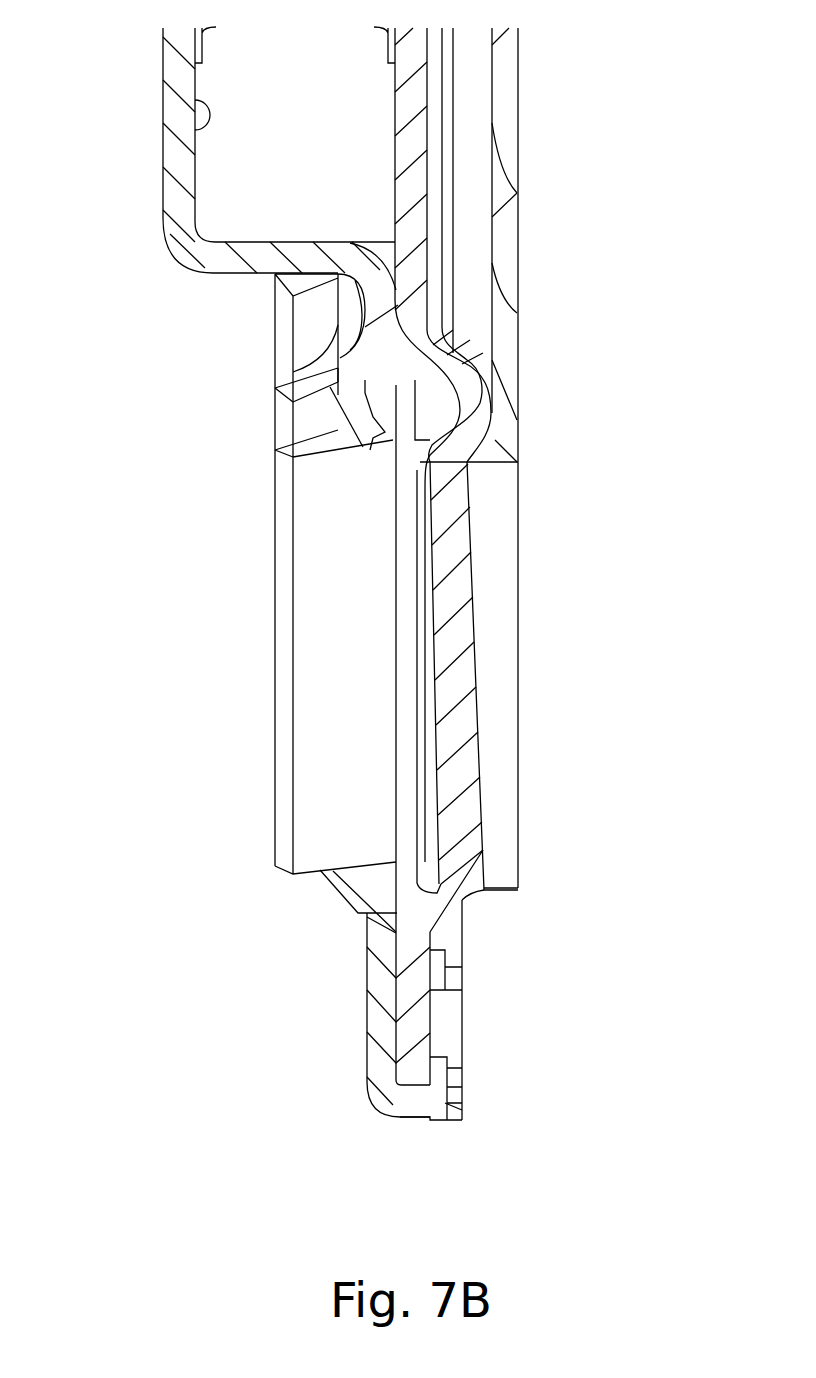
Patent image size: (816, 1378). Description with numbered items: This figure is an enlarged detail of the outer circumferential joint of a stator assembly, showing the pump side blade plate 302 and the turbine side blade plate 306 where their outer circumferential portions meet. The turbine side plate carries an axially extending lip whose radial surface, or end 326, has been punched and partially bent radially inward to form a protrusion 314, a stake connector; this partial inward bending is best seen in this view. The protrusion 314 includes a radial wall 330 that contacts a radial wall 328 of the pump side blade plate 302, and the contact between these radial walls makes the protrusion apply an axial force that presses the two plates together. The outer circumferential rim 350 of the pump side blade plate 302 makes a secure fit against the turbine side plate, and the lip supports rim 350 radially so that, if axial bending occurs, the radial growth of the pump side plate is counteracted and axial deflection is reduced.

The turbine side blade plate 306 is at (158, 180).
The pump side blade plate 302 is at (473, 350).
The outer circumferential rim 350 is at (415, 1078).
The radial wall 328 is at (430, 1023).
The radial wall 330 is at (445, 1068).
The radial surface (end) of lip 326 is at (458, 1108).
The radially inward protrusion 314 is at (410, 1120).